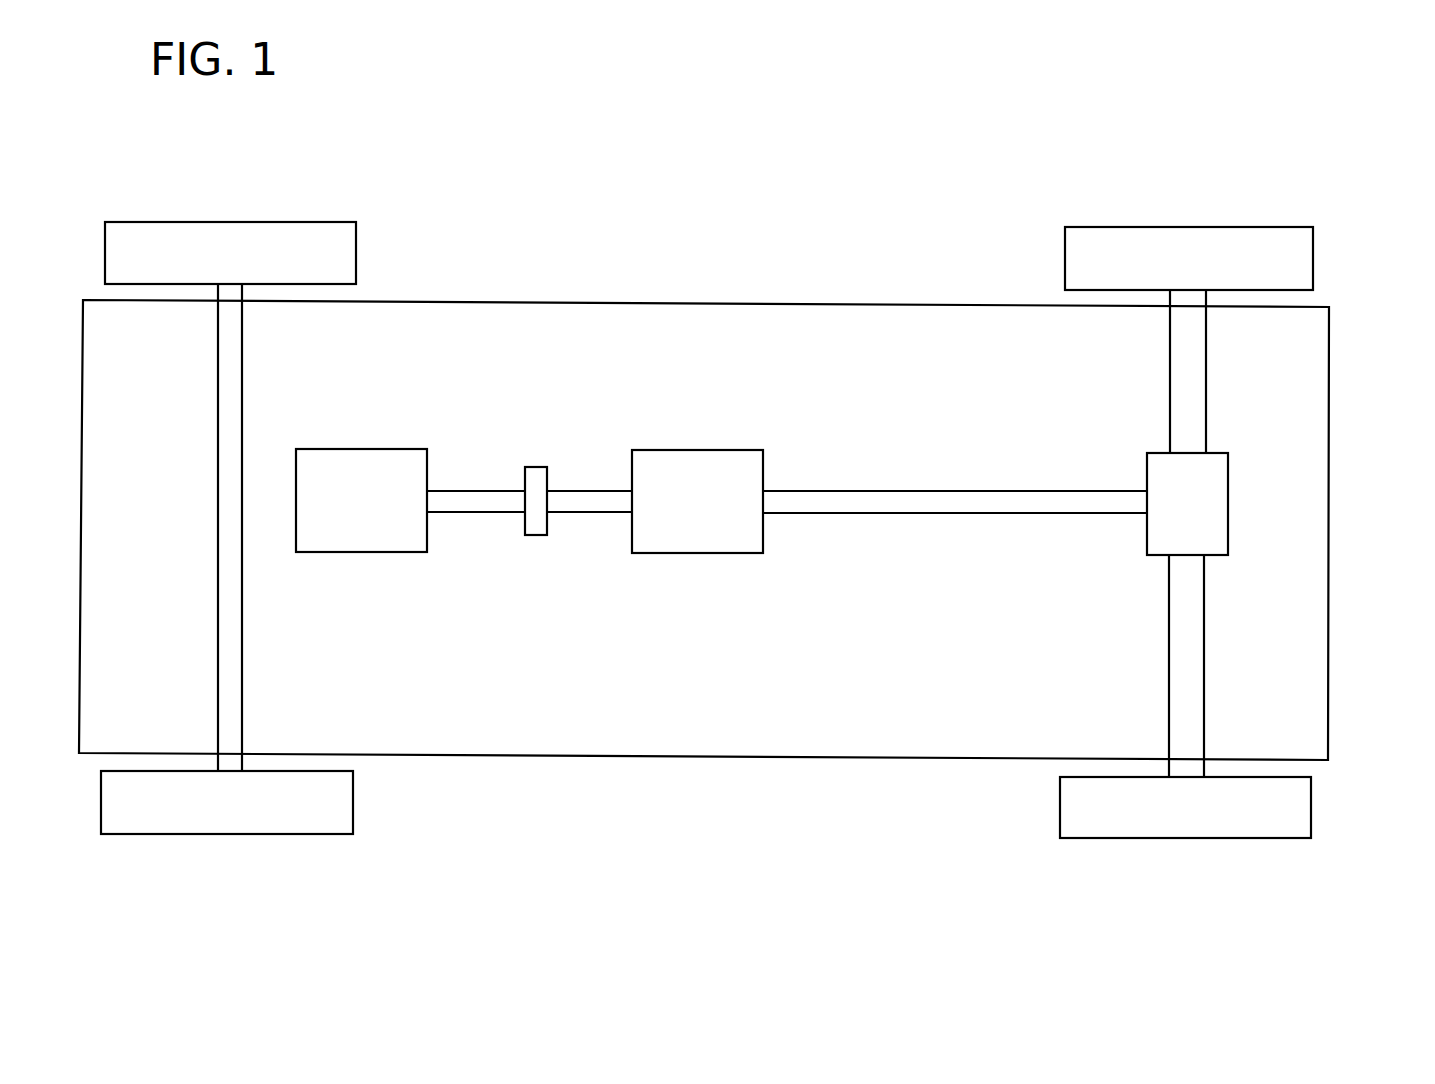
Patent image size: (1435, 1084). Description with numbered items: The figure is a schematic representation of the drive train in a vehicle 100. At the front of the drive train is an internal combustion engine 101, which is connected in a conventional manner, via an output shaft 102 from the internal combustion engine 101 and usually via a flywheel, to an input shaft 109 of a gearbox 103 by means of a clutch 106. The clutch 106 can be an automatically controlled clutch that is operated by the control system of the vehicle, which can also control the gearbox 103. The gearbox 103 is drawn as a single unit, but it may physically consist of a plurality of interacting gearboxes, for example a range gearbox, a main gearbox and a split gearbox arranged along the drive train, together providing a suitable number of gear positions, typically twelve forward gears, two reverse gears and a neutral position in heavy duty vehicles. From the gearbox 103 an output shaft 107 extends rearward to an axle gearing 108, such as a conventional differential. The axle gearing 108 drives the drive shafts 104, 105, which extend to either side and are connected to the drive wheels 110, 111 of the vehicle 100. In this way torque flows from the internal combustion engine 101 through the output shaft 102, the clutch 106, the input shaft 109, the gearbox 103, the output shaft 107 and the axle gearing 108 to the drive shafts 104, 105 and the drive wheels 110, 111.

The vehicle 100 is at (600, 122).
The internal combustion engine 101 is at (330, 538).
The output shaft 102 is at (453, 497).
The gearbox 103 is at (700, 462).
The drive shaft 104 is at (1193, 372).
The drive shaft 105 is at (1197, 677).
The clutch 106 is at (528, 523).
The output shaft 107 is at (1058, 510).
The axle gearing 108 is at (1222, 500).
The input shaft 109 is at (575, 498).
The drive wheel 110 is at (1303, 814).
The drive wheel 111 is at (1308, 252).